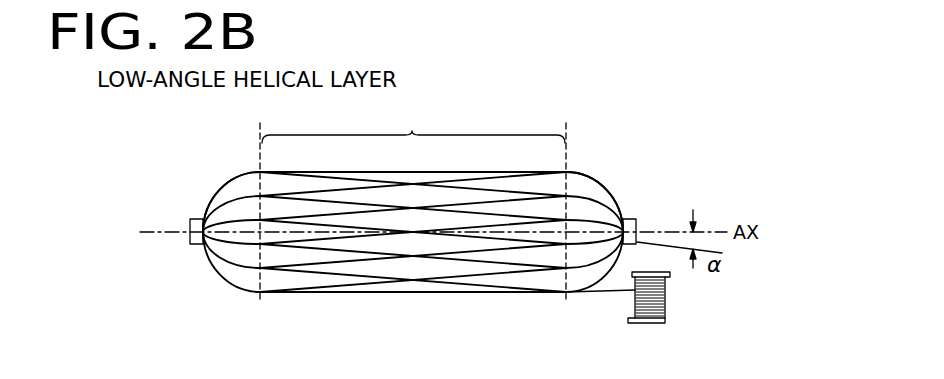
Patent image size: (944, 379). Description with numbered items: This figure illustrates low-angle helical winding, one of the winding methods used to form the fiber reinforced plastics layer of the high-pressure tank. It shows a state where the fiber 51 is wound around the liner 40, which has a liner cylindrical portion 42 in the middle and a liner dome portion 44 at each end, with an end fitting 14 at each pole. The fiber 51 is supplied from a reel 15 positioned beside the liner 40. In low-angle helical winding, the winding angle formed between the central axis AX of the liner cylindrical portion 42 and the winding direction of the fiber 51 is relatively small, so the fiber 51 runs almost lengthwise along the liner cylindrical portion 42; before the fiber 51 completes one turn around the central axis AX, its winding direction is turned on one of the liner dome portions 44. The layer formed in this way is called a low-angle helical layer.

The end fitting 14 is at (185, 218).
The reel 15 is at (673, 312).
The liner 40 is at (626, 131).
The liner cylindrical portion 42 is at (413, 122).
The liner dome portion 44 is at (247, 185).
The fiber 51 is at (593, 296).